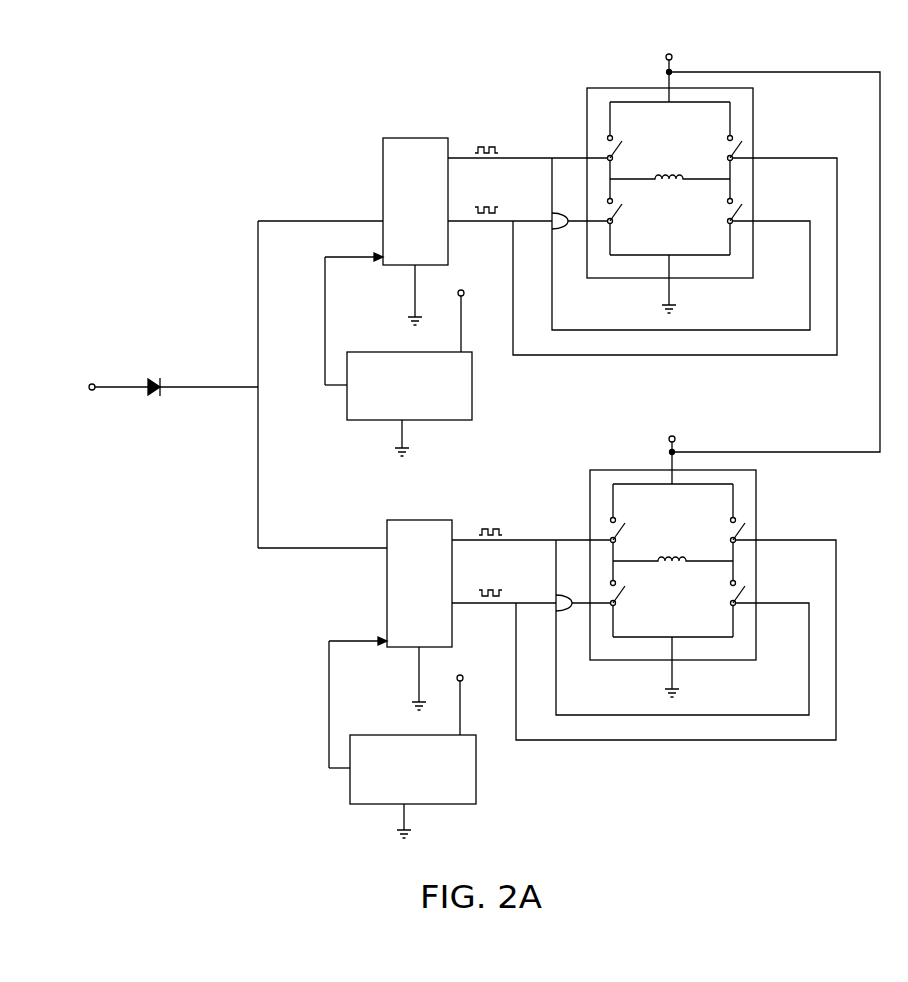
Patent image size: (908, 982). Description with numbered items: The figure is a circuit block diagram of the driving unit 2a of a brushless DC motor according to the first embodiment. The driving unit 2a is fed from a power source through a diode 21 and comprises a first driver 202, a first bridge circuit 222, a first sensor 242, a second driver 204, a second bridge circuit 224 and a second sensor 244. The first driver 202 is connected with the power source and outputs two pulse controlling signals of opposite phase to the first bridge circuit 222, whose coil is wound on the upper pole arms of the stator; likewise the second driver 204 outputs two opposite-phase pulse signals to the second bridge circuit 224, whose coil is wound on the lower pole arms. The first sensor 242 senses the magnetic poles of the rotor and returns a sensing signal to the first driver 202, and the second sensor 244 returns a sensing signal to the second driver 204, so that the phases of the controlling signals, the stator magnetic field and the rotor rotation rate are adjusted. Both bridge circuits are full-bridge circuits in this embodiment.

The driving unit 2a is at (58, 123).
The diode 21 is at (153, 376).
The first driver 202 is at (383, 173).
The second driver 204 is at (387, 591).
The first bridge circuit 222 is at (753, 105).
The second bridge circuit 224 is at (756, 487).
The first sensor 242 is at (347, 406).
The second sensor 244 is at (350, 793).